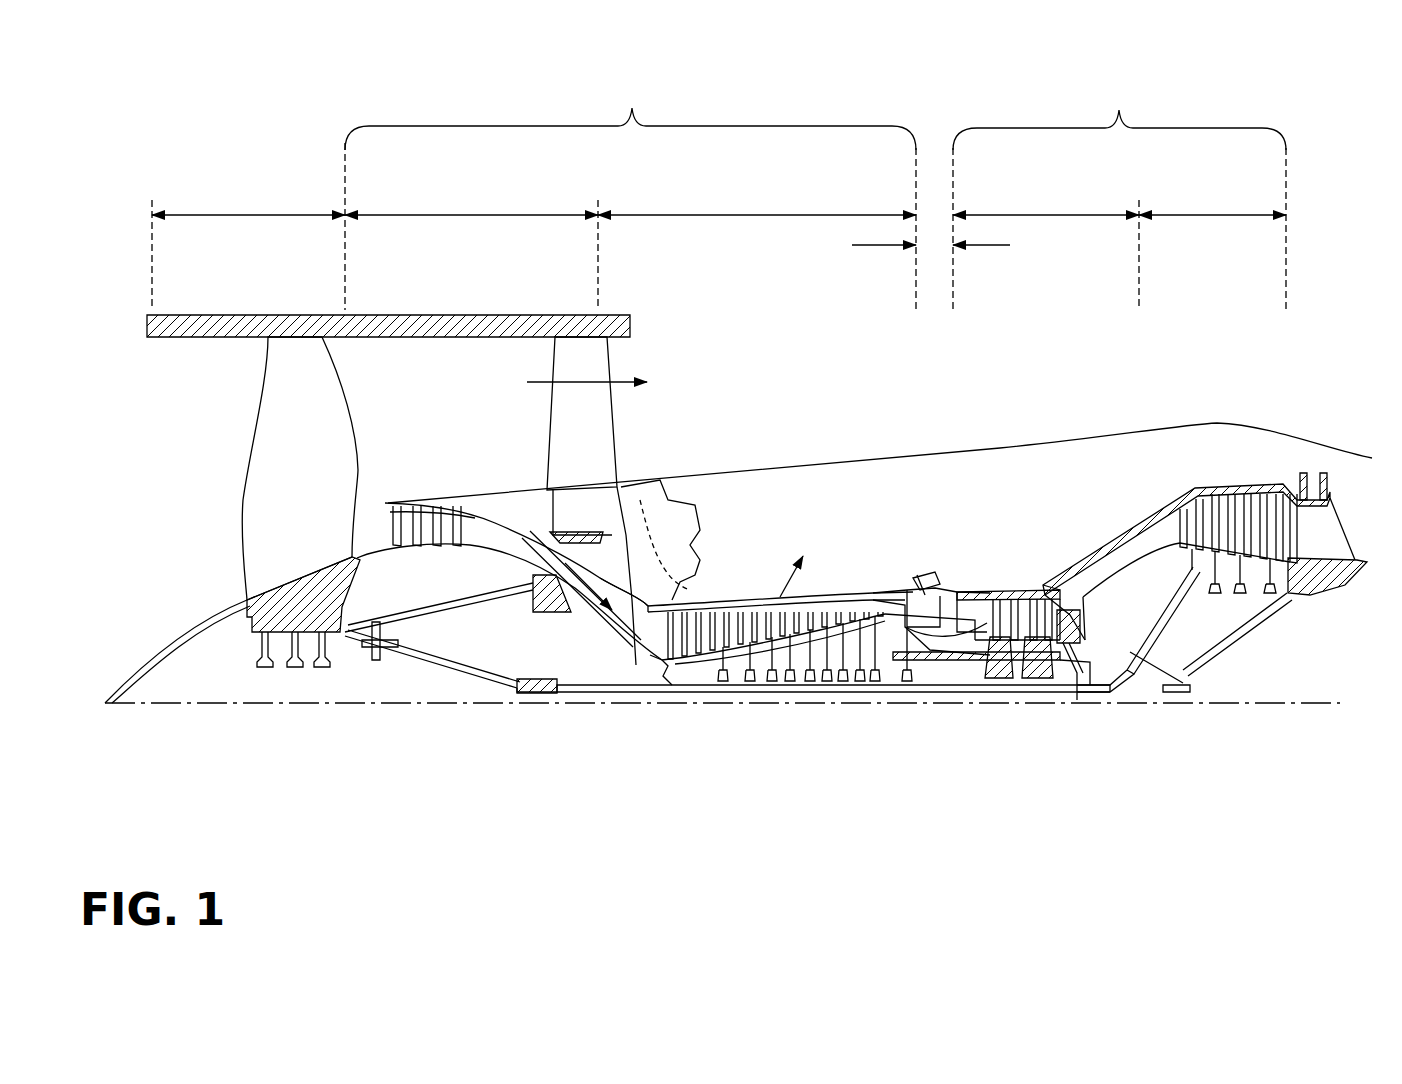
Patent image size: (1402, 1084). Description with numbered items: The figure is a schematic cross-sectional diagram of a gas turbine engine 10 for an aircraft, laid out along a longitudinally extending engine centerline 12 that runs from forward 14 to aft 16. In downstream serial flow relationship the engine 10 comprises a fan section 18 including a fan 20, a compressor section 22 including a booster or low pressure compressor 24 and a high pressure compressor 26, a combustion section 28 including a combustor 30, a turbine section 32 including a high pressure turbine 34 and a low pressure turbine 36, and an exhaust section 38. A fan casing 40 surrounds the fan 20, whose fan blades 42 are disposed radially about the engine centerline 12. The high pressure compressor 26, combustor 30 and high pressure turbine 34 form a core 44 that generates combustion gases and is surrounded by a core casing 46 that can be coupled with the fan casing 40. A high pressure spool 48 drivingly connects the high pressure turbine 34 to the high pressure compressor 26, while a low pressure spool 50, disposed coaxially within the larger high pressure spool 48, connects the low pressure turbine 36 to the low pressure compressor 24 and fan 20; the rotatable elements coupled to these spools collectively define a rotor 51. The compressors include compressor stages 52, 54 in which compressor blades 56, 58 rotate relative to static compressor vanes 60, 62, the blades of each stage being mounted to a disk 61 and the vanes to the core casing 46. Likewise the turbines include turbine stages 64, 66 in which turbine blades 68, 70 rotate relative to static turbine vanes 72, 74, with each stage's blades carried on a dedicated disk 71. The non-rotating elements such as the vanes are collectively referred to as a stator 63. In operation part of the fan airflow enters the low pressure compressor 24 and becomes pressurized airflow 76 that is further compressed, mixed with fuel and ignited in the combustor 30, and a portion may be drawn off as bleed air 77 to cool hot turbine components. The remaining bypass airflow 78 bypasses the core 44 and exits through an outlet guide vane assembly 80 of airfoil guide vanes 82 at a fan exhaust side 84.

The gas turbine engine 10 is at (1300, 242).
The engine centerline 12 is at (228, 705).
The forward 14 is at (186, 445).
The aft 16 is at (1386, 535).
The fan section 18 is at (245, 215).
The fan 20 is at (228, 558).
The compressor section 22 is at (633, 110).
The low pressure compressor 24 is at (478, 215).
The high pressure compressor 26 is at (760, 215).
The combustion section 28 is at (862, 250).
The combustor 30 is at (955, 600).
The turbine section 32 is at (1120, 110).
The high pressure turbine 34 is at (1045, 215).
The low pressure turbine 36 is at (1210, 215).
The exhaust section 38 is at (1373, 480).
The fan casing 40 is at (378, 315).
The fan blades 42 is at (305, 385).
The core 44 is at (882, 488).
The core casing 46 is at (1123, 520).
The HP spool 48 is at (920, 650).
The LP spool 50 is at (545, 692).
The rotor 51 is at (787, 695).
The compressor stages 52 is at (458, 455).
The compressor stages 54 is at (760, 600).
The compressor blades 56 is at (417, 507).
The compressor blades 58 is at (685, 612).
The static compressor vanes 60 is at (405, 508).
The disk 61 is at (690, 678).
The static compressor vanes 62 is at (663, 592).
The stator 63 is at (663, 660).
The turbine stages 64 is at (955, 547).
The turbine stages 66 is at (1215, 412).
The turbine blades 68 is at (1008, 598).
The turbine blades 70 is at (1277, 498).
The disk 71 is at (1010, 650).
The static turbine vanes 72 is at (1000, 590).
The static turbine vanes 74 is at (1256, 495).
The pressurized airflow 76 is at (566, 612).
The bleed air 77 is at (790, 565).
The bypass airflow 78 is at (530, 382).
The outlet guide vane assembly 80 is at (627, 447).
The airfoil guide vanes 82 is at (556, 420).
The fan exhaust side 84 is at (633, 355).